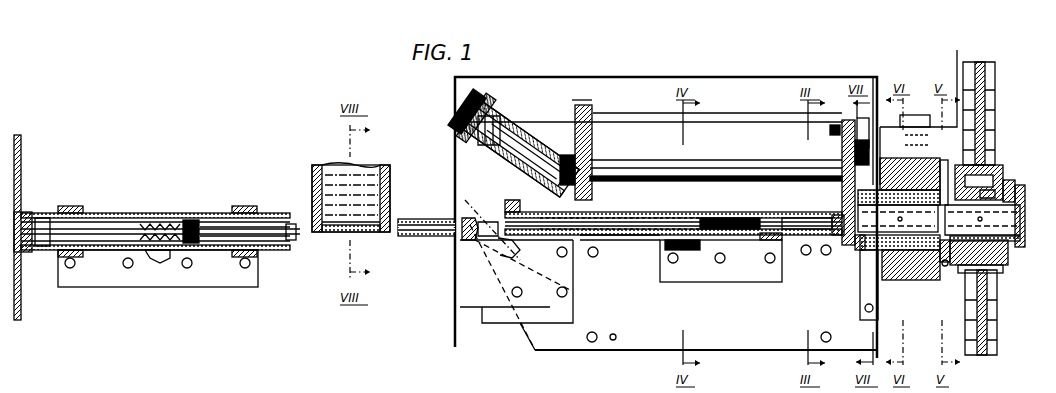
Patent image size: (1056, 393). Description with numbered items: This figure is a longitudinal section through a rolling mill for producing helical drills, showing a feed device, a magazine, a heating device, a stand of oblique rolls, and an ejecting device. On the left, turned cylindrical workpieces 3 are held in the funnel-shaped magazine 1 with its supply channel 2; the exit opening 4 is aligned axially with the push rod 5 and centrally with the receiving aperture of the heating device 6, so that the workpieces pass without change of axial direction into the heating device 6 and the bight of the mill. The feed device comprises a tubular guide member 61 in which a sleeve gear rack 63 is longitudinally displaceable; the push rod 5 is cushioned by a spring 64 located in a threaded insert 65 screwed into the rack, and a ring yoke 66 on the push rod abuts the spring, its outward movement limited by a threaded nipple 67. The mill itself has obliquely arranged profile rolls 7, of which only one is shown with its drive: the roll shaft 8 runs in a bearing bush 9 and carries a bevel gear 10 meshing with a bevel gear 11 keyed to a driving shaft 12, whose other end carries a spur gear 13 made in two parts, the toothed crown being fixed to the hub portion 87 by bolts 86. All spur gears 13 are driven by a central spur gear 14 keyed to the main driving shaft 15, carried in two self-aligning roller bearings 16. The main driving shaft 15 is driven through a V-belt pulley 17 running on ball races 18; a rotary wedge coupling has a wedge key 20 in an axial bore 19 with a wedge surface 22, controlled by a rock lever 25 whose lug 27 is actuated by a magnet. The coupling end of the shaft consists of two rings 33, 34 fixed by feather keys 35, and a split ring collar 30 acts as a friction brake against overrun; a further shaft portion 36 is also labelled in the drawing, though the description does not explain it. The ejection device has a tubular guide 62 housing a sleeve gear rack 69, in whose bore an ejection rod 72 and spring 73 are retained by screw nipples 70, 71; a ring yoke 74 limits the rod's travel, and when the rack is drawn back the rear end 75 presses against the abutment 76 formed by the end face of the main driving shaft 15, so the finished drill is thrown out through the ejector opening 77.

The magazine 1 is at (307, 165).
The supply channel 2 is at (388, 178).
The cylindrical workpieces 3 is at (328, 232).
The exit opening 4 is at (384, 232).
The push rod 5 is at (292, 222).
The heating device 6 is at (415, 237).
The profile rolls 7 is at (506, 245).
The roll shaft 8 is at (498, 168).
The bearing bush 9 is at (508, 152).
The bevel gear 10 is at (563, 128).
The bevel gear 11 is at (585, 155).
The driving shaft 12 is at (720, 160).
The spur gear 13 is at (855, 118).
The central spur gear 14 is at (857, 250).
The main driving shaft 15 is at (912, 281).
The self-aligning roller bearings 16 is at (862, 278).
The V-belt pulley 17 is at (993, 73).
The ball races 18 is at (1000, 168).
The axial bore 19 is at (1012, 182).
The wedge key 20 is at (1024, 198).
The wedge surface 22 is at (979, 181).
The rock lever 25 is at (988, 186).
The lug 27 is at (925, 117).
The split ring collar 30 is at (942, 162).
The ring 33 is at (1005, 266).
The ring 34 is at (945, 266).
The feather keys 35 is at (1012, 257).
The main shaft 36 is at (934, 230).
The tubular guide member 61 is at (118, 214).
The tubular guide 62 is at (797, 212).
The sleeve gear rack 63 is at (148, 214).
The spring 64 is at (190, 218).
The threaded insert 65 is at (168, 220).
The ring yoke 66 is at (205, 217).
The threaded nipple 67 is at (200, 240).
The sleeve gear rack 69 is at (650, 242).
The screw nipple 70 is at (516, 210).
The screw nipple 71 is at (710, 212).
The ejection rod 72 is at (630, 212).
The spring 73 is at (655, 212).
The ring yoke 74 is at (545, 238).
The rear end 75 is at (745, 212).
The abutment 76 is at (838, 220).
The ejector opening 77 is at (605, 242).
The bolts 86 is at (838, 128).
The hub portion 87 is at (840, 147).